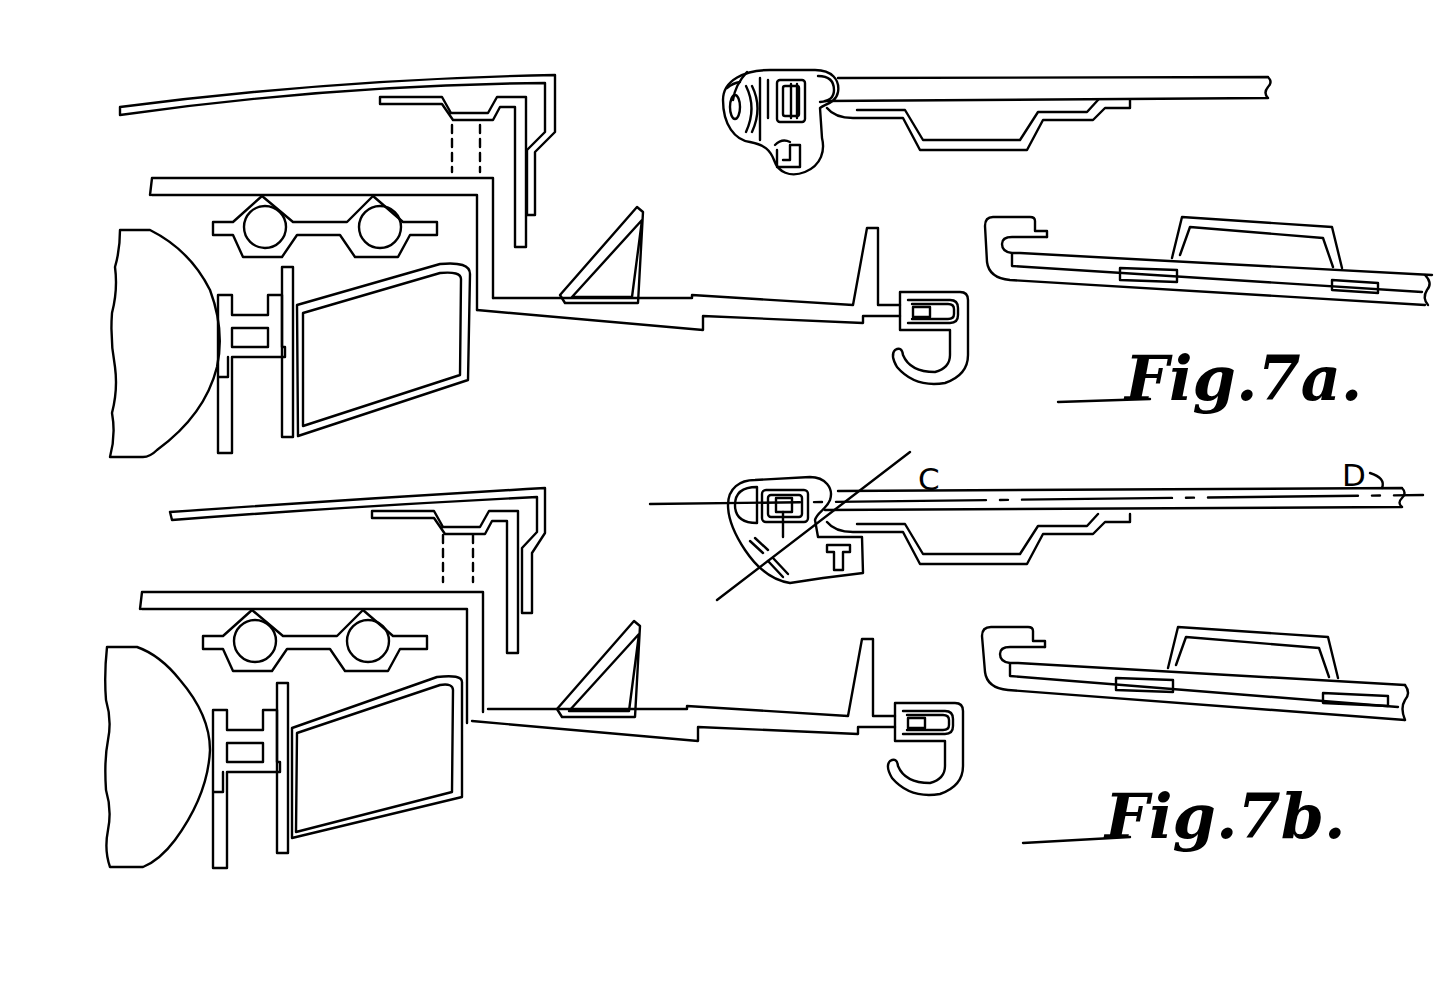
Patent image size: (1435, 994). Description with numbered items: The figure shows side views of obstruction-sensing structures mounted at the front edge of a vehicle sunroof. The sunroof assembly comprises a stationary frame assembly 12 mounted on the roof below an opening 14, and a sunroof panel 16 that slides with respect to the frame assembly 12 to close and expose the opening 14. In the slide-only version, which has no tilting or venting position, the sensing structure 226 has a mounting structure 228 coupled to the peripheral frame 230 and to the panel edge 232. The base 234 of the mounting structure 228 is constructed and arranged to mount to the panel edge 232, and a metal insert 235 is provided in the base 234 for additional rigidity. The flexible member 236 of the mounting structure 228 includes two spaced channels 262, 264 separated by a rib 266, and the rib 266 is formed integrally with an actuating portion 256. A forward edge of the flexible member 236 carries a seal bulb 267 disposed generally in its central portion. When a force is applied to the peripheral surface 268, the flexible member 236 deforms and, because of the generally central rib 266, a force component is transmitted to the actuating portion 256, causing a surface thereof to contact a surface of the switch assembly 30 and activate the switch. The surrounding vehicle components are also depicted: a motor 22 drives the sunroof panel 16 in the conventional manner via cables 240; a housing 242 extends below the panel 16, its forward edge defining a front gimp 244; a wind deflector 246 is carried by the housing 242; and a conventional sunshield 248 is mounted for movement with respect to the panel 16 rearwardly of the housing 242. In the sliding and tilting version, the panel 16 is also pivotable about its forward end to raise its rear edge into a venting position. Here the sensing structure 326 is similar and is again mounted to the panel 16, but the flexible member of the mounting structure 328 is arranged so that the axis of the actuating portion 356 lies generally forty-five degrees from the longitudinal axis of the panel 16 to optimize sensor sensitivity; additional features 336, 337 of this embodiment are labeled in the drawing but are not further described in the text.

In FIG. 7A, the stationary frame assembly 12 is at (468, 70).
In FIG. 7B, the stationary frame assembly 12 is at (352, 487).
In FIG. 7A, the opening 14 is at (571, 110).
In FIG. 7B, the opening 14 is at (586, 550).
In FIG. 7A, the sunroof panel 16 is at (1029, 70).
In FIG. 7B, the sunroof panel 16 is at (1092, 488).
In FIG. 7A, the motor 22 is at (143, 443).
In FIG. 7A, the switch assembly 30 is at (765, 140).
In FIG. 7B, the switch assembly 30 is at (810, 483).
In FIG. 7A, the sensing structure 226 is at (855, 71).
In FIG. 7A, the mounting structure 228 is at (722, 77).
In FIG. 7A, the peripheral frame 230 is at (830, 122).
In FIG. 7A, the panel edge 232 is at (814, 77).
In FIG. 7A, the base 234 is at (823, 165).
In FIG. 7A, the metal insert 235 is at (797, 80).
In FIG. 7A, the flexible member 236 is at (727, 88).
In FIG. 7A, the cables 240 is at (368, 217).
In FIG. 7B, the cables 240 is at (359, 631).
In FIG. 7A, the housing 242 is at (753, 322).
In FIG. 7B, the housing 242 is at (823, 727).
In FIG. 7A, the front gimp 244 is at (966, 366).
In FIG. 7B, the front gimp 244 is at (955, 770).
In FIG. 7A, the wind deflector 246 is at (643, 303).
In FIG. 7B, the wind deflector 246 is at (633, 717).
In FIG. 7A, the sunshield 248 is at (1076, 265).
In FIG. 7B, the sunshield 248 is at (1093, 688).
In FIG. 7A, the actuating portion 256 is at (765, 83).
In FIG. 7A, the channel 262 is at (747, 72).
In FIG. 7A, the channel 264 is at (743, 143).
In FIG. 7A, the rib 266 is at (753, 112).
In FIG. 7A, the seal bulb 267 is at (737, 110).
In FIG. 7A, the peripheral surface 268 is at (730, 107).
In FIG. 7B, the sensing structure 326 is at (760, 458).
In FIG. 7B, the mounting structure 328 is at (720, 492).
In FIG. 7B, the slot 336 is at (767, 580).
In FIG. 7B, the slot 337 is at (735, 533).
In FIG. 7B, the actuating portion 356 is at (818, 577).